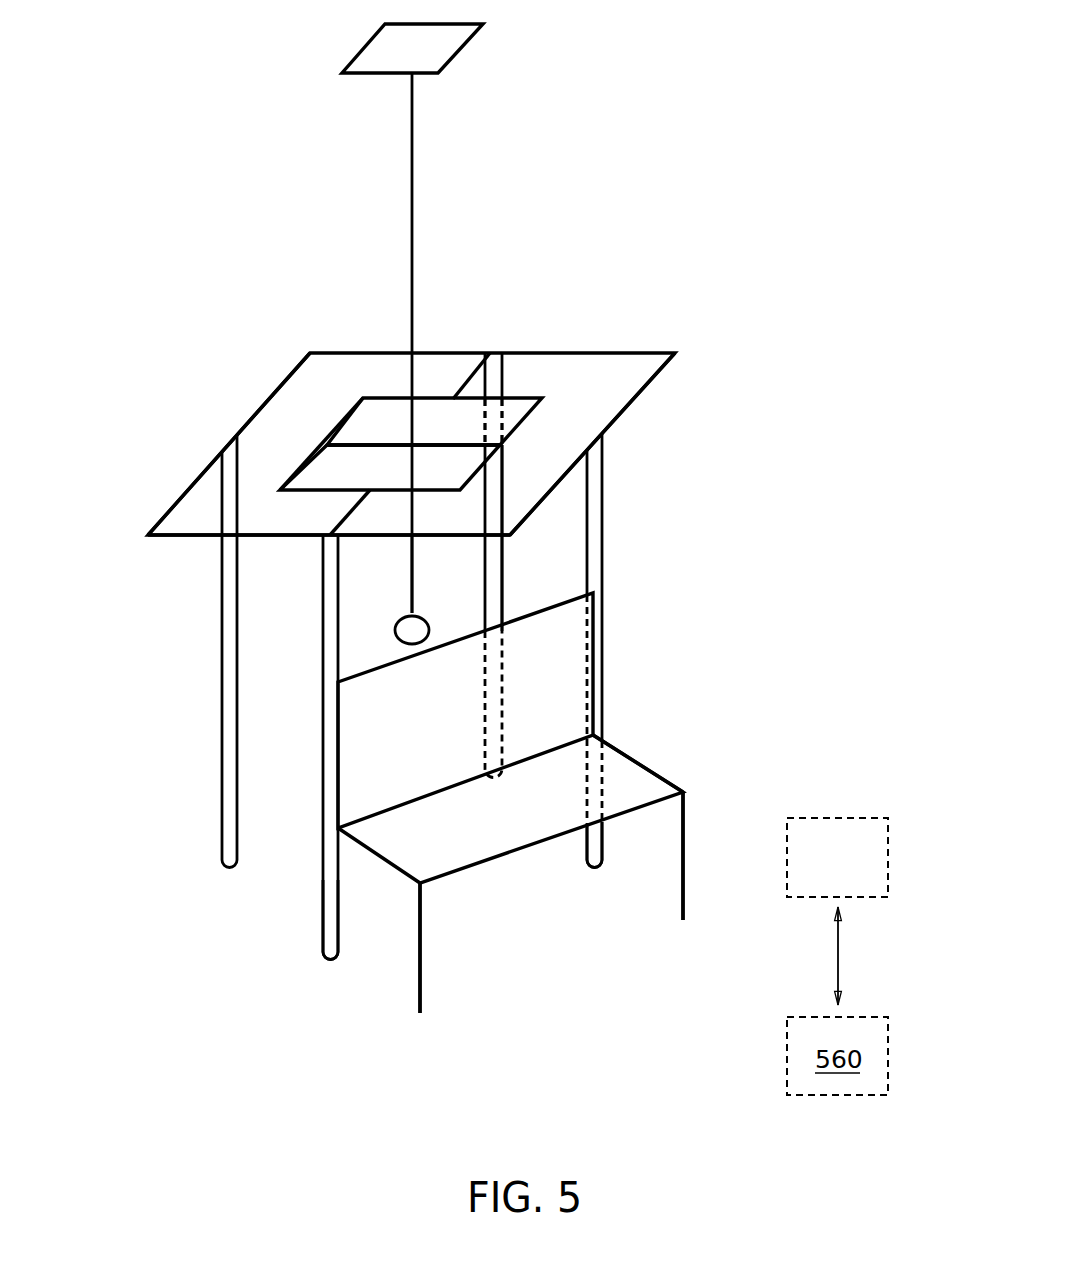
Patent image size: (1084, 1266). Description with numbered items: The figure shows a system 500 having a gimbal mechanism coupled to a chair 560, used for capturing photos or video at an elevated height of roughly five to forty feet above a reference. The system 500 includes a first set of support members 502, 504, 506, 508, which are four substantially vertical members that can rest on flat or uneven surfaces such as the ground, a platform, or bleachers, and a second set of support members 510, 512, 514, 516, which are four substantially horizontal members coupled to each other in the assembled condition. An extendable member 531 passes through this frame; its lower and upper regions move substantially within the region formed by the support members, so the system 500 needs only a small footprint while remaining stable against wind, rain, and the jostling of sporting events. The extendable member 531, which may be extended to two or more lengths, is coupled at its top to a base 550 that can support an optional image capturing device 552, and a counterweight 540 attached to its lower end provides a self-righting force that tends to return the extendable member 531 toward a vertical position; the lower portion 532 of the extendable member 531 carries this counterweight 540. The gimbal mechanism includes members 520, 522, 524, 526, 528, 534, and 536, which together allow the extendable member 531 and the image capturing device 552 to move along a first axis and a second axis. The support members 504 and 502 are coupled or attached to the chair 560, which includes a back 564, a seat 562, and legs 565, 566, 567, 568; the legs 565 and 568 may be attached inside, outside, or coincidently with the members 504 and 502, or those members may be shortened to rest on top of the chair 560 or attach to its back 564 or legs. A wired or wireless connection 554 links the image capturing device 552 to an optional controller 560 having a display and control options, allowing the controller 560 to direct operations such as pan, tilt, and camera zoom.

The system 500 is at (697, 70).
The support member 502 is at (603, 540).
The support member 504 is at (323, 668).
The support member 506 is at (222, 722).
The support member 508 is at (505, 557).
The support member 510 is at (555, 353).
The support member 512 is at (633, 397).
The support member 514 is at (190, 537).
The support member 516 is at (268, 399).
The gimbal mechanism member 520 is at (510, 398).
The gimbal mechanism member 522 is at (357, 510).
The gimbal mechanism member 524 is at (303, 493).
The gimbal mechanism member 526 is at (300, 468).
The gimbal mechanism member 528 is at (465, 368).
The extendable member 531 is at (447, 228).
The shaft lower portion 532 is at (413, 592).
The gimbal mechanism member 534 is at (447, 447).
The gimbal mechanism member 536 is at (343, 440).
The counterweight 540 is at (395, 622).
The base 550 is at (365, 46).
The image capturing device 552 is at (860, 873).
The wired or wireless connection 554 is at (838, 956).
The chair 560 is at (490, 883).
The seat 562 is at (640, 763).
The back 564 is at (430, 746).
The leg 565 is at (323, 900).
The leg 566 is at (422, 967).
The leg 567 is at (685, 855).
The leg 568 is at (603, 843).